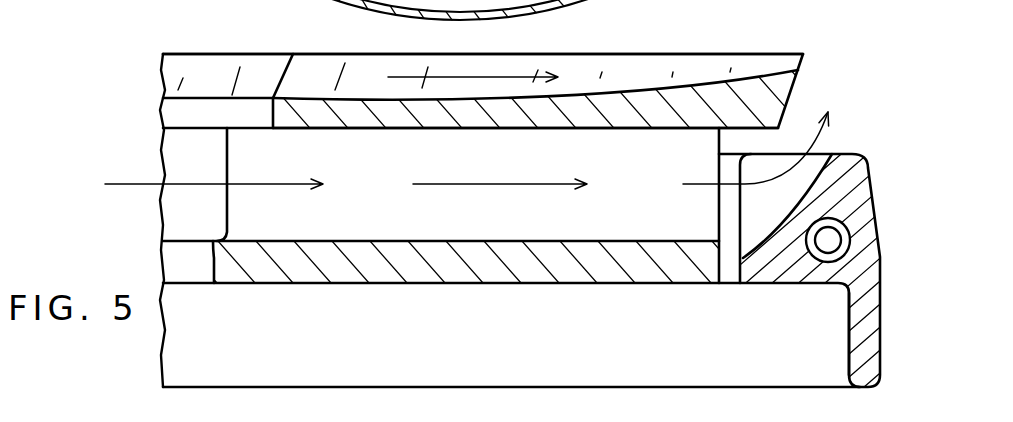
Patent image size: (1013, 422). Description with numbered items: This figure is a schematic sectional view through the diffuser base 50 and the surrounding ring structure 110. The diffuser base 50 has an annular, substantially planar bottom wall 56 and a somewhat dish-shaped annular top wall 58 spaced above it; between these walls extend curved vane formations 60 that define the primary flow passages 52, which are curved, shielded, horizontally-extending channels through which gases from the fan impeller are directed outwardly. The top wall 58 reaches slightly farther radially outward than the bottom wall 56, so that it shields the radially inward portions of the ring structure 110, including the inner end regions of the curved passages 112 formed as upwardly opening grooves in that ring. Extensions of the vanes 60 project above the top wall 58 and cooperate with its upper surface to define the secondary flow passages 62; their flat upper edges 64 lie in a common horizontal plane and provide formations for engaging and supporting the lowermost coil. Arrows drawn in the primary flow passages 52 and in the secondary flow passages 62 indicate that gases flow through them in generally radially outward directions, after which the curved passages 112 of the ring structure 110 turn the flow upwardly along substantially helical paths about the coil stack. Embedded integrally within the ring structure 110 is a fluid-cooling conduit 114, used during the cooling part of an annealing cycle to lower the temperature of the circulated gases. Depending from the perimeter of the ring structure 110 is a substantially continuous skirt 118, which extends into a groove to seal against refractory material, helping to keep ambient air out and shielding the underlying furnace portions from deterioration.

The diffuser base 50 is at (505, 82).
The primary flow passages 52 is at (558, 232).
The bottom wall 56 is at (333, 275).
The top wall 58 is at (378, 127).
The curved vane formations 60 is at (455, 224).
The secondary flow passages 62 is at (638, 62).
The flat upper edges 64 is at (528, 54).
The ring structure 110 is at (818, 218).
The curved passages 112 is at (807, 180).
The fluid-cooling conduit 114 is at (847, 227).
The skirt 118 is at (857, 355).